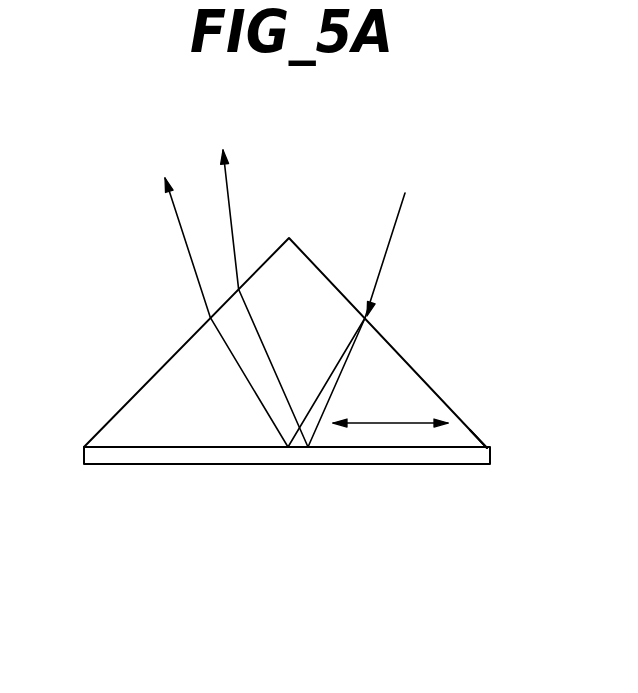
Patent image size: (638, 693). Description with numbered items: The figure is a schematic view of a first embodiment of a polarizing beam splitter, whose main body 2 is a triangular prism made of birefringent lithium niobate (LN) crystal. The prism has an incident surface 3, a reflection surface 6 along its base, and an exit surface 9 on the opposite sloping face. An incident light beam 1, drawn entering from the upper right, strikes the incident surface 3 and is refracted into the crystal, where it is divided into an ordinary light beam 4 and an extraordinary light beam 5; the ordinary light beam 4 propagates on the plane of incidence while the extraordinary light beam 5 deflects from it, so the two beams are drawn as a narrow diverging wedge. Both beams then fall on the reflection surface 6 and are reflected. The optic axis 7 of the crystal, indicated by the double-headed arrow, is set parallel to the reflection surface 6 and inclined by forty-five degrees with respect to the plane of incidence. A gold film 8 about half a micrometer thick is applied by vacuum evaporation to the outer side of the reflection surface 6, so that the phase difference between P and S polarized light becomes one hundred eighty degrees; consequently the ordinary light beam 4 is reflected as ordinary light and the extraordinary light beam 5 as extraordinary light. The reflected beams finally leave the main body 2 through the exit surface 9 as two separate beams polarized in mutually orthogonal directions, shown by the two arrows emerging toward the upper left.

The light beam 1 is at (398, 220).
The main body 2 is at (200, 425).
The incident surface 3 is at (430, 384).
The ordinary light beam 4 is at (345, 382).
The extraordinary light beam 5 is at (345, 382).
The reflection surface 6 is at (467, 447).
The optic axis 7 is at (397, 423).
The gold film 8 is at (296, 455).
The exit surface 9 is at (142, 386).